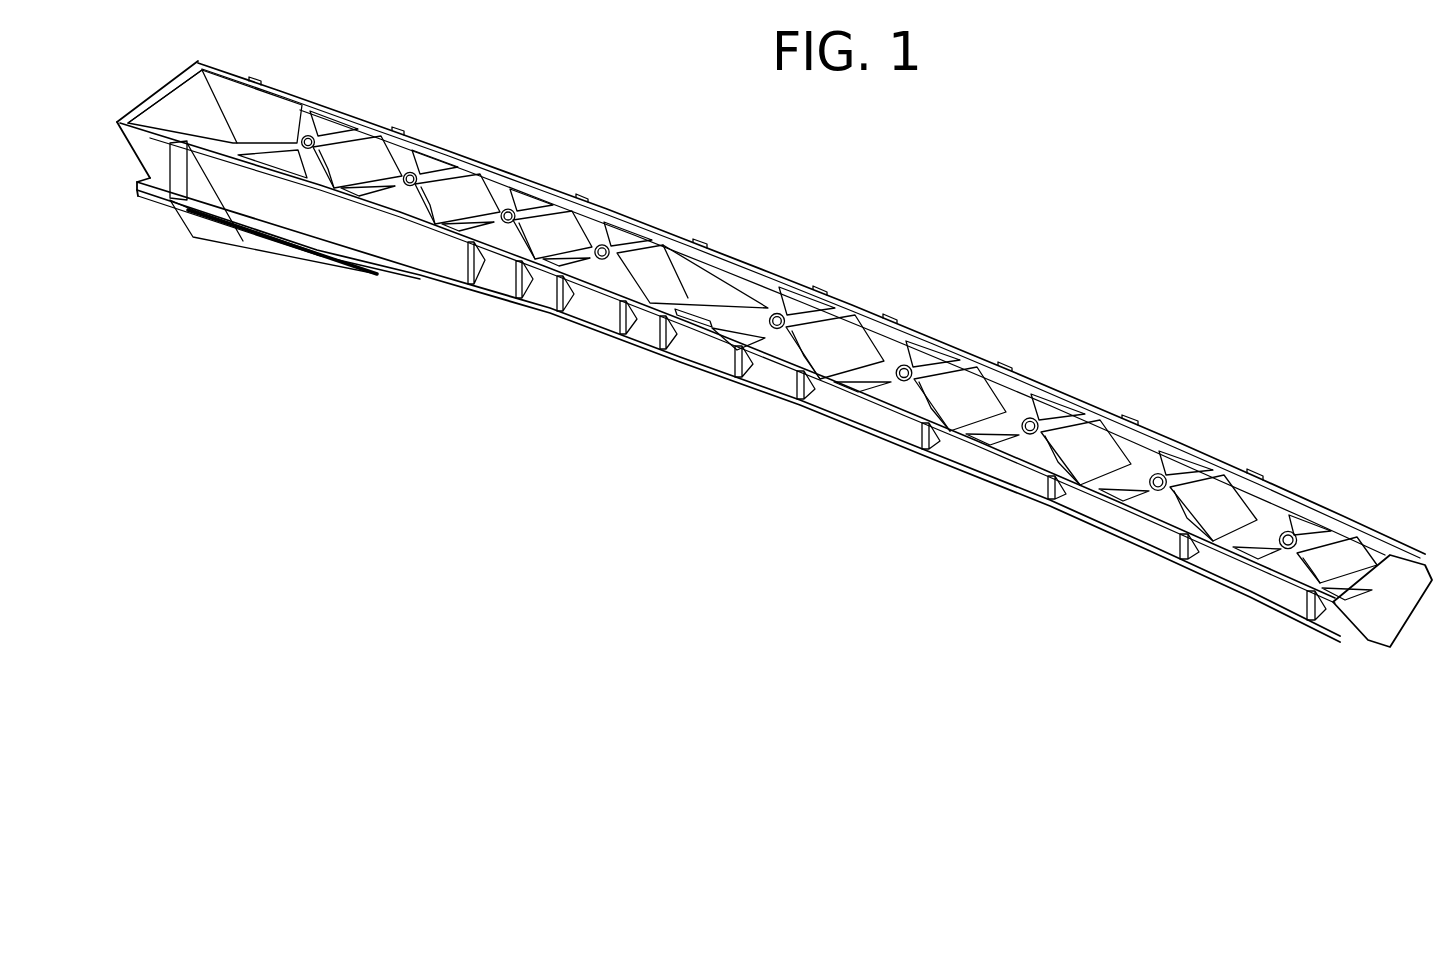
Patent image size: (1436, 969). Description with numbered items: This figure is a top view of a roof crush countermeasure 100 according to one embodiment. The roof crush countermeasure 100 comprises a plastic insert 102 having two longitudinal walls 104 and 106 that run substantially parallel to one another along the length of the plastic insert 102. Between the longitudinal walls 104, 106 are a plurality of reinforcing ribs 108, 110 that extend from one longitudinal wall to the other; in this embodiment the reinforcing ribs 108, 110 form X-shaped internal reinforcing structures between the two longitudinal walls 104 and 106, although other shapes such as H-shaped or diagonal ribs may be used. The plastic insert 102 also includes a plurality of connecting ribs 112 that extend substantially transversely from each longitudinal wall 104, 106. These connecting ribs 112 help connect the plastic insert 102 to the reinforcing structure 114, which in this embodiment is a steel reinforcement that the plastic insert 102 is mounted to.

The roof crush countermeasure 100 is at (1168, 206).
The plastic insert 102 is at (1387, 637).
The longitudinal wall 104 is at (822, 400).
The longitudinal wall 106 is at (720, 256).
The reinforcing rib 108 is at (406, 215).
The reinforcing rib 110 is at (1258, 545).
The connecting rib 112 is at (722, 367).
The reinforcing structure 114 is at (1122, 535).